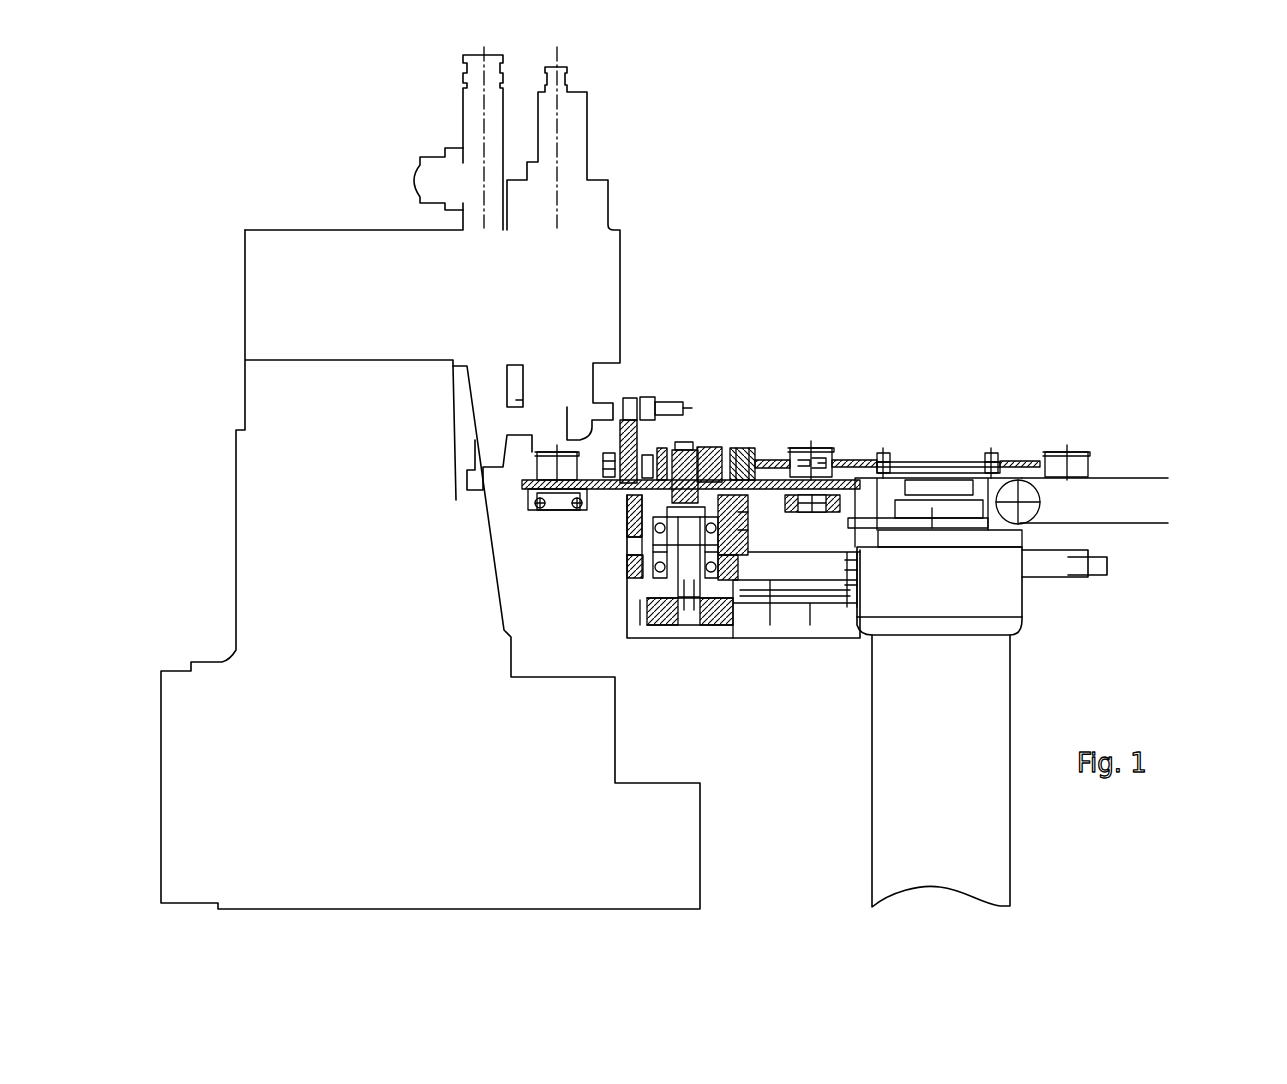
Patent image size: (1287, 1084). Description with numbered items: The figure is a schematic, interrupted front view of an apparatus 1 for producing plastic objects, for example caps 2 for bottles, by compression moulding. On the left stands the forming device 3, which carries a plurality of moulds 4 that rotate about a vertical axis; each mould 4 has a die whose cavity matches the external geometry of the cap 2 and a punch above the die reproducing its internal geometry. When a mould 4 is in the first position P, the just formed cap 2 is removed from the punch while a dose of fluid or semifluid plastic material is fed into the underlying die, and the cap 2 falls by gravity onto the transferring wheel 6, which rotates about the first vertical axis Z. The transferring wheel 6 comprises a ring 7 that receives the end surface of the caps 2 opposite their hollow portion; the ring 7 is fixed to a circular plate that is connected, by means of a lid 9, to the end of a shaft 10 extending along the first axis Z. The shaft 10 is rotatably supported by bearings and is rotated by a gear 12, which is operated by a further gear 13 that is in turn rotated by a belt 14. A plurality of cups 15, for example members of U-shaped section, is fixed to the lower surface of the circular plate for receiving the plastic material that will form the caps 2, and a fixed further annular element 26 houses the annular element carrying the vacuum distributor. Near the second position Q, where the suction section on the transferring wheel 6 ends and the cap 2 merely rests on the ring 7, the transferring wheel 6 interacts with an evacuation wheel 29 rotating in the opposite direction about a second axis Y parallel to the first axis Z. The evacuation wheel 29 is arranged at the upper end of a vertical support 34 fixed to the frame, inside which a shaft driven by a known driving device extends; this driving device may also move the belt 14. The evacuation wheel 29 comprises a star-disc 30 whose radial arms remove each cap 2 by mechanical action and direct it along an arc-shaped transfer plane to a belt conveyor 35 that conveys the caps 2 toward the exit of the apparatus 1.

The apparatus 1 is at (957, 185).
The cap 2 is at (813, 443).
The forming device 3 is at (228, 213).
The mould 4 is at (567, 407).
The transferring wheel 6 is at (760, 457).
The ring 7 is at (522, 490).
The lid 9 is at (707, 447).
The shaft 10 is at (682, 558).
The gear 12 is at (650, 630).
The further gear 13 is at (747, 630).
The belt 14 is at (815, 593).
The cup 15 is at (533, 513).
The further annular element 26 is at (747, 448).
The evacuation wheel 29 is at (968, 452).
The star-disc 30 is at (1012, 462).
The vertical support 34 is at (975, 712).
The belt conveyor 35 is at (1140, 478).
The first position P is at (512, 501).
The second position Q is at (815, 432).
The second axis Y is at (933, 457).
The first axis Z is at (688, 578).